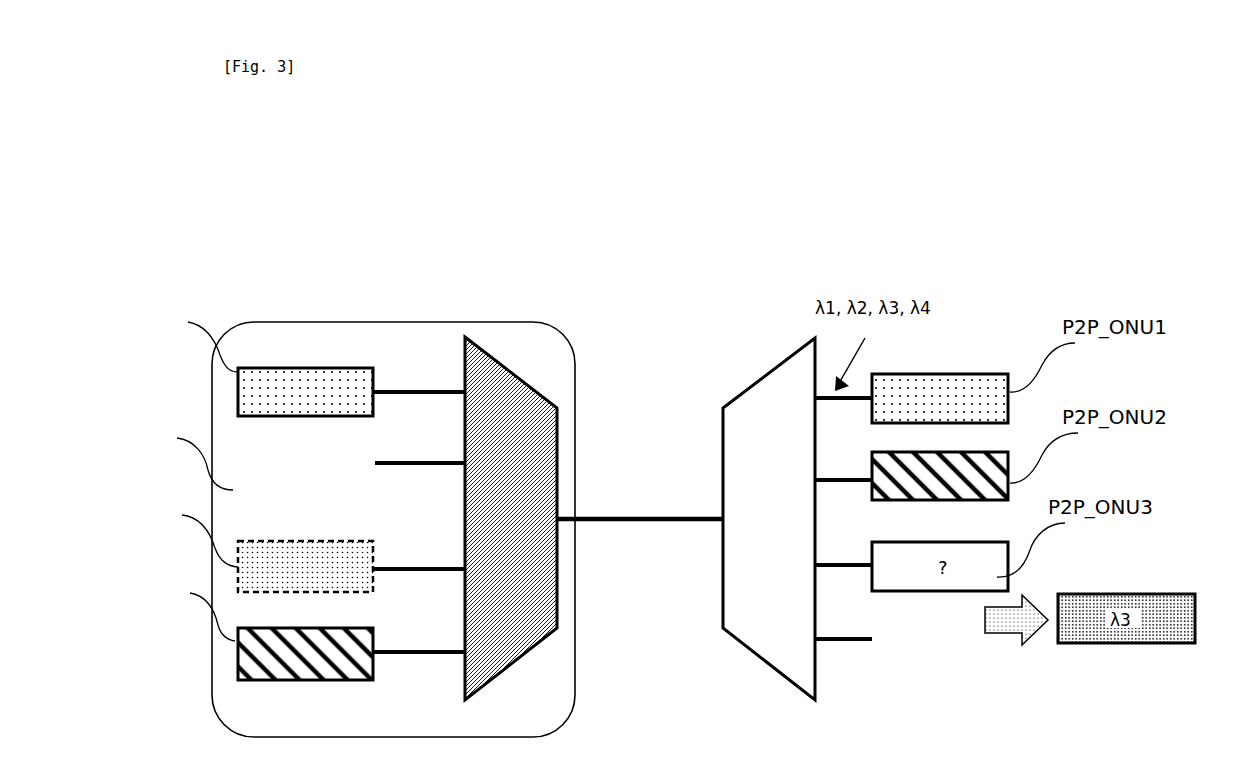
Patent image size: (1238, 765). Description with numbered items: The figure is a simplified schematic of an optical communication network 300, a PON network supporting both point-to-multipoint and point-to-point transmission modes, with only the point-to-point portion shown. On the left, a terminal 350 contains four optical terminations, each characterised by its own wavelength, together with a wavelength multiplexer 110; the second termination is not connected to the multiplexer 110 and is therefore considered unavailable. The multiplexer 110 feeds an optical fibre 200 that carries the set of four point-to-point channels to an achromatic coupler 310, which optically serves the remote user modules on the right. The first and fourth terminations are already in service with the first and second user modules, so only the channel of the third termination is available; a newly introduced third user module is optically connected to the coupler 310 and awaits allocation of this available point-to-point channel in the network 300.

The optical communication network 300 is at (306, 248).
The terminal 350 is at (313, 323).
The wavelength multiplexer 110 is at (510, 368).
The optical fibre 200 is at (657, 516).
The achromatic coupler 310 is at (782, 361).